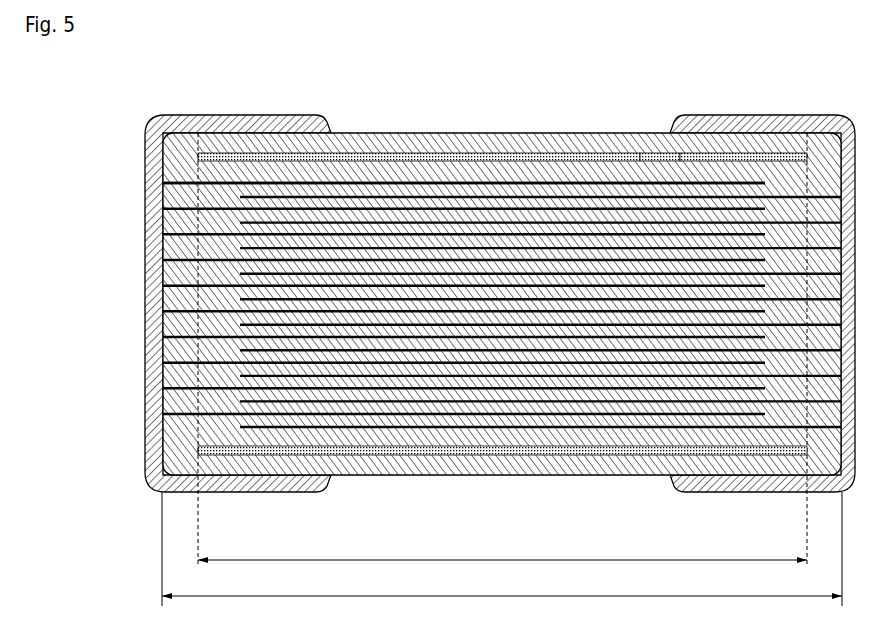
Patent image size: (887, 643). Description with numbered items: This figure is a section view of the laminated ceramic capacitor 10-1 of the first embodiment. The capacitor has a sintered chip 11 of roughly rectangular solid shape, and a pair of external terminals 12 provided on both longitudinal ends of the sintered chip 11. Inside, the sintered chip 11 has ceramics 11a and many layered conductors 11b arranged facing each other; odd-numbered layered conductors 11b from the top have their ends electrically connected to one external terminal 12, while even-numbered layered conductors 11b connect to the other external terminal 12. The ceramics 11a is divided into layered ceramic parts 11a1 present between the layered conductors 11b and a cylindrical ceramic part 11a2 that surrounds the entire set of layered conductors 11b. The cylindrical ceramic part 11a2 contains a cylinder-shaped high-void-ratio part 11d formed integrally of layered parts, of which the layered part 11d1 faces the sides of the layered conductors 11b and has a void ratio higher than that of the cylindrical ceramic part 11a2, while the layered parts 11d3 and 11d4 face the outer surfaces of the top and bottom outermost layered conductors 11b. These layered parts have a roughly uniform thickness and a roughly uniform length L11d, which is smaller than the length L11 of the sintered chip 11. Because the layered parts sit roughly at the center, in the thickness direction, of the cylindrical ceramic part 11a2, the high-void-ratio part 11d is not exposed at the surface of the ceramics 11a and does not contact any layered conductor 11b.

The laminated ceramic capacitor 10-1 is at (467, 315).
The sintered chip 11 is at (460, 315).
The ceramics 11a is at (160, 152).
The layered ceramic part 11a1 is at (470, 173).
The cylindrical ceramic part 11a2 is at (535, 173).
The layered conductor 11b is at (167, 184).
The high-void-ratio part 11d is at (502, 315).
The layered part 11d1 is at (726, 125).
The layered part 11d3 is at (655, 155).
The layered part 11d4 is at (627, 468).
The external terminal 12 is at (236, 125).
The length of layered parts L11d is at (502, 575).
The length of sintered chip L11 is at (502, 560).